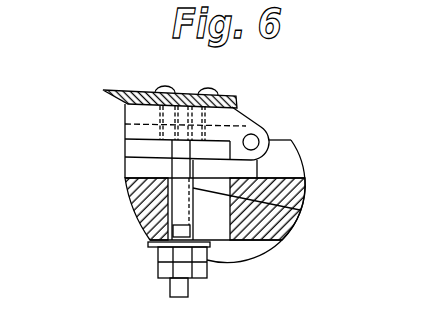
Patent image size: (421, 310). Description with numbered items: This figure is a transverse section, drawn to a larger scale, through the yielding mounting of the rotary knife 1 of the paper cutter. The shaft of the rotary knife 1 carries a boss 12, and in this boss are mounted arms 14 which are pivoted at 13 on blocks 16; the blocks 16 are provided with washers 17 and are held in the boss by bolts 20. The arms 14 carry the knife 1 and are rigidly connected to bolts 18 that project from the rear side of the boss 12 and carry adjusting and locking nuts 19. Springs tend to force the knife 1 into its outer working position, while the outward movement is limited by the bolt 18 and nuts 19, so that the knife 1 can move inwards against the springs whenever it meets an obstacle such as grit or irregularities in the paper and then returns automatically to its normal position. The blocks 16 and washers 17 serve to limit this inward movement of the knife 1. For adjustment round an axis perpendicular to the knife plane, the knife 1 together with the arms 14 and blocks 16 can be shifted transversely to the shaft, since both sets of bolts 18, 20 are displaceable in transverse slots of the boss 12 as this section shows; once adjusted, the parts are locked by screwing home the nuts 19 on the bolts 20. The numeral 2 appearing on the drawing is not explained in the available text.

The rotary knife 1 is at (135, 93).
The plate edge 2 is at (104, 91).
The boss 12 is at (148, 205).
The pivot 13 is at (252, 141).
The arms 14 is at (130, 117).
The blocks 16 is at (132, 147).
The washers 17 is at (126, 173).
The bolts 18 is at (300, 210).
The adjusting and locking nuts 19 is at (202, 272).
The bolts 20 is at (182, 205).